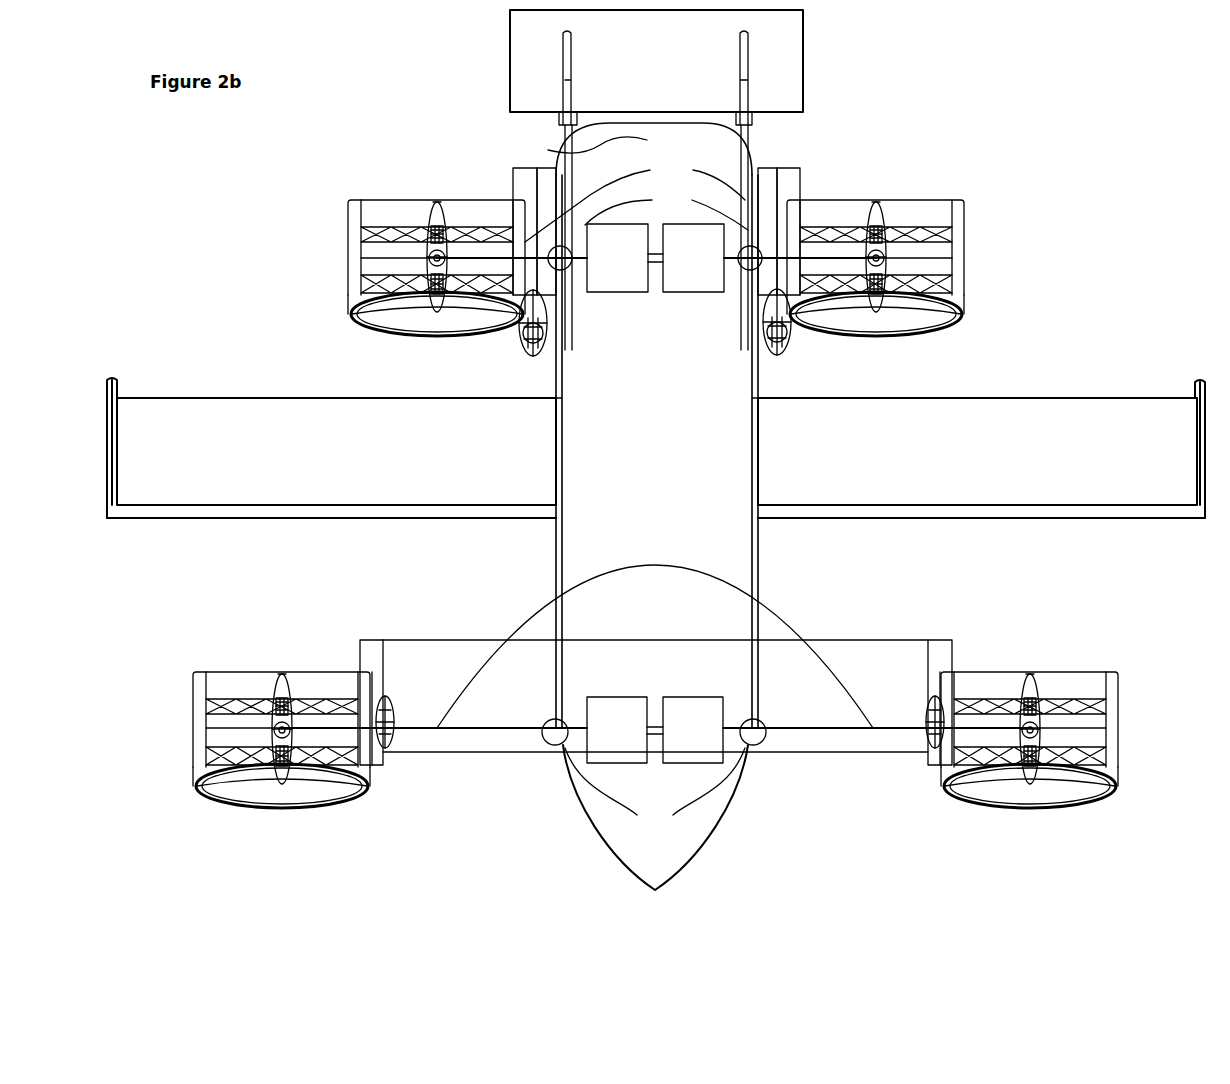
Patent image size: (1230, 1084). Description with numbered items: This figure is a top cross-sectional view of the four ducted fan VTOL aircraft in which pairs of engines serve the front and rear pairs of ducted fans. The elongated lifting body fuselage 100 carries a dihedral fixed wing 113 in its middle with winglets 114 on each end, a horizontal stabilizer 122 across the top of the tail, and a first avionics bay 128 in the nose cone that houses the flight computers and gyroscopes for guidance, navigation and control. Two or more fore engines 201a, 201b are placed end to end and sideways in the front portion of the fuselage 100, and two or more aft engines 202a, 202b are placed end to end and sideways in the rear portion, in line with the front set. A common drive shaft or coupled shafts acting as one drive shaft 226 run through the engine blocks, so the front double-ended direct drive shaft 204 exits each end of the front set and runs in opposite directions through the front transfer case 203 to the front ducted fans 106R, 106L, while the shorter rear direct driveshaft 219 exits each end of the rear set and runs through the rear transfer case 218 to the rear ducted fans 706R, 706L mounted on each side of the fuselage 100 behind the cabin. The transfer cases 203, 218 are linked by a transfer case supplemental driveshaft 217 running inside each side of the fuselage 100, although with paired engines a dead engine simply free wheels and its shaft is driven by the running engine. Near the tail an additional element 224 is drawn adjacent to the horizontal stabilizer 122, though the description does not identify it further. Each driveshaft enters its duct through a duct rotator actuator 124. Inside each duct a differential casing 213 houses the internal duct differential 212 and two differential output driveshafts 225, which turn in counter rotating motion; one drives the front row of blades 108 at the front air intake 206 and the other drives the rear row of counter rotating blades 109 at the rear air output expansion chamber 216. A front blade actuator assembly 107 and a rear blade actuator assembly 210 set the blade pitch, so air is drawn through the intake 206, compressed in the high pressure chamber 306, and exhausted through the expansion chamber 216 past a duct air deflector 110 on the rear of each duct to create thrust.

The fuselage 100 is at (725, 572).
The left front ducted fan 106L is at (1112, 735).
The right front ducted fan 106R is at (200, 760).
The front blade actuator assembly 107 is at (452, 312).
The front row of blades 108 is at (437, 302).
The rear row of counter rotating blades 109 is at (347, 222).
The duct air deflector 110 is at (437, 200).
The fixed wing 113 is at (395, 490).
The winglets 114 is at (120, 385).
The horizontal stabilizer 122 is at (680, 78).
The duct rotator actuator 124 is at (548, 310).
The first avionics bay 128 is at (645, 853).
The front engine 201a is at (690, 697).
The front engine 201b is at (622, 697).
The rear engine 202a is at (694, 292).
The rear engine 202b is at (598, 292).
The front transfer case 203 is at (655, 789).
The front double-ended direct drive shaft 204 is at (613, 565).
The front air intake 206 is at (500, 330).
The rear blade actuator assembly 210 is at (446, 215).
The internal duct differential 212 is at (425, 237).
The differential casing 213 is at (420, 245).
The rear air output expansion chamber 216 is at (418, 210).
The transfer case supplemental driveshaft 217 is at (752, 505).
The rear transfer case 218 is at (666, 209).
The rear direct driveshaft 219 is at (635, 200).
The tail frame curve 224 is at (580, 145).
The differential output driveshafts 225 is at (385, 298).
The common drive shaft 226 is at (745, 305).
The high pressure chamber 306 is at (388, 247).
The left rear ducted fan 706L is at (962, 258).
The right rear ducted fan 706R is at (357, 262).